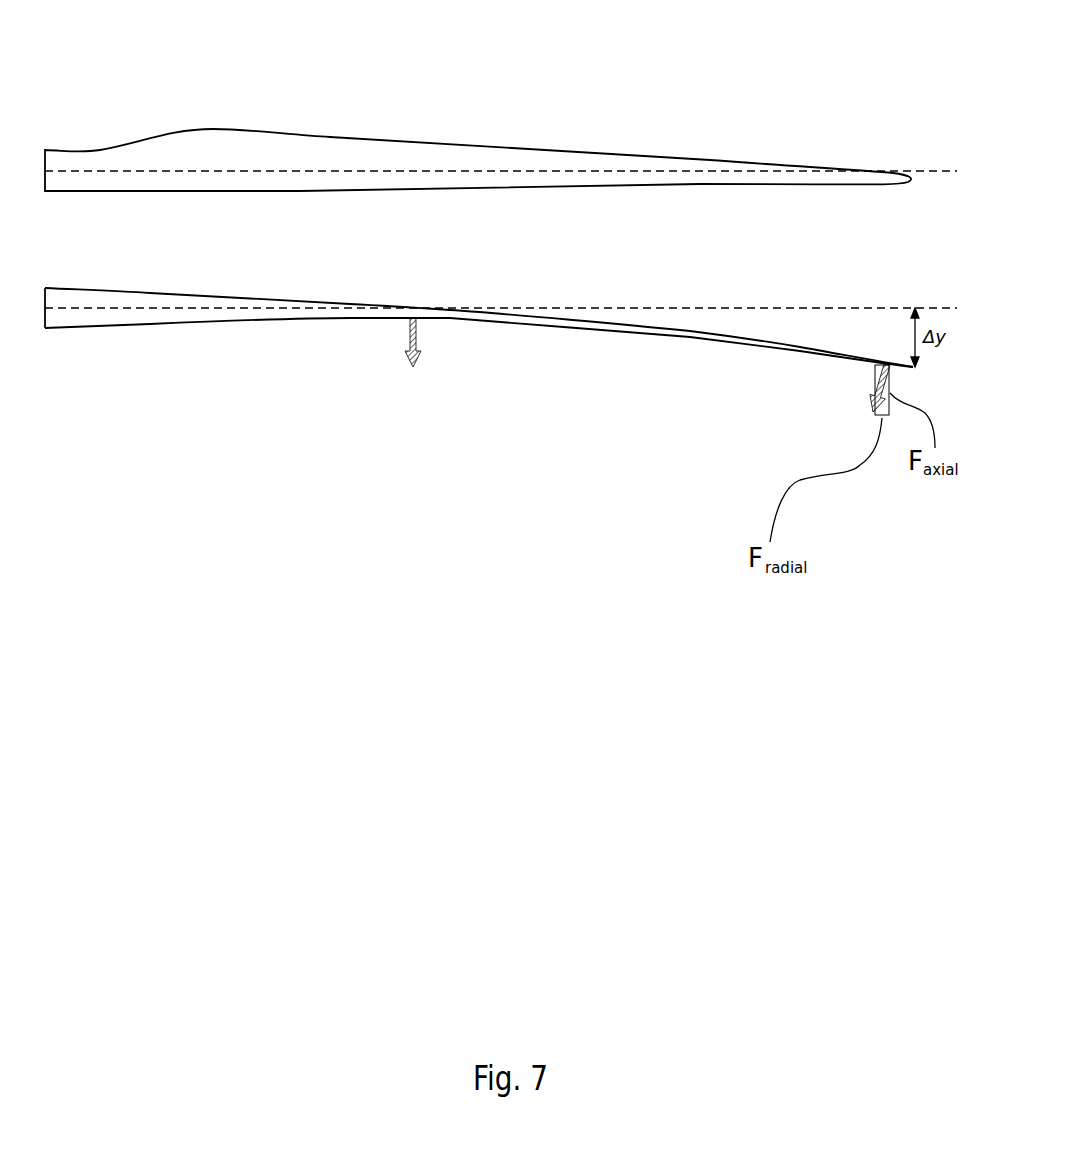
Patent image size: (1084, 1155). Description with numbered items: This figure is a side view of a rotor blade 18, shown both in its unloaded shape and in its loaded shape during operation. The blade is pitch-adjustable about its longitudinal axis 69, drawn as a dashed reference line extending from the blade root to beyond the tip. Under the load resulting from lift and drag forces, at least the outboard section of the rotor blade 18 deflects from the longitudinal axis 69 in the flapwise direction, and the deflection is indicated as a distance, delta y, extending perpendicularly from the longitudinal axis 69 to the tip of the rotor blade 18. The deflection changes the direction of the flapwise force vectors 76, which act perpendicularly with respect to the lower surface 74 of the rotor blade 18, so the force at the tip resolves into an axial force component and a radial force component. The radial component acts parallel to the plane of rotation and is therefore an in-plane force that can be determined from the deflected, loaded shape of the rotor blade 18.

The rotor blade 18 is at (348, 120).
The longitudinal axis 69 is at (930, 170).
The lower surface 74 is at (660, 338).
The flapwise force vectors 76 is at (862, 403).